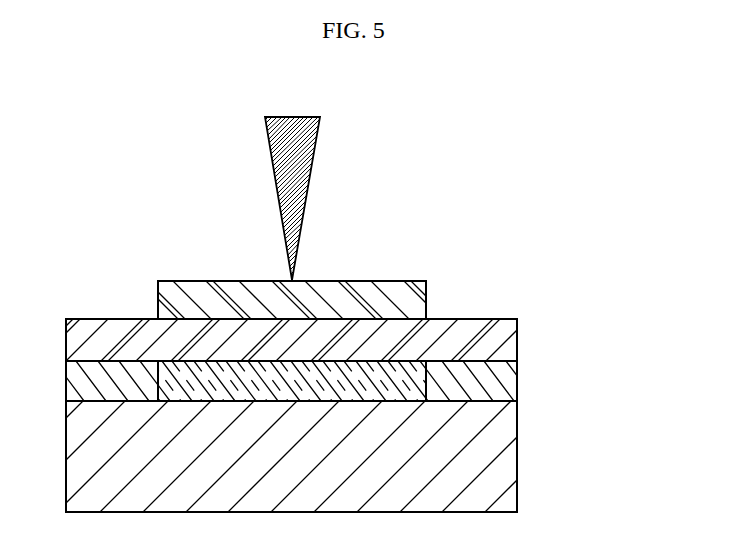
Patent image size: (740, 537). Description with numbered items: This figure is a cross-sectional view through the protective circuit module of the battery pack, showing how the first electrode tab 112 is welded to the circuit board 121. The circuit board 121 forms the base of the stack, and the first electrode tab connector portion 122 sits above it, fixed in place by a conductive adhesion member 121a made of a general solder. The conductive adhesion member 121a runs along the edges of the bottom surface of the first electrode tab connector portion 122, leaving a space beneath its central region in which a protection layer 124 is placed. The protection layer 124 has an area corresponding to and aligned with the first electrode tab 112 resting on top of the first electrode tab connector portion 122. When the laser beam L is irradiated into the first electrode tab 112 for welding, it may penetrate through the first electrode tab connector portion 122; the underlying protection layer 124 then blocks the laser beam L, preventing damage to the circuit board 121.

The laser beam L is at (312, 140).
The first electrode tab 112 is at (396, 290).
The first electrode tab connector portion 122 is at (500, 338).
The conductive adhesion member 121a is at (505, 380).
The protection layer 124 is at (195, 382).
The circuit board 121 is at (500, 461).